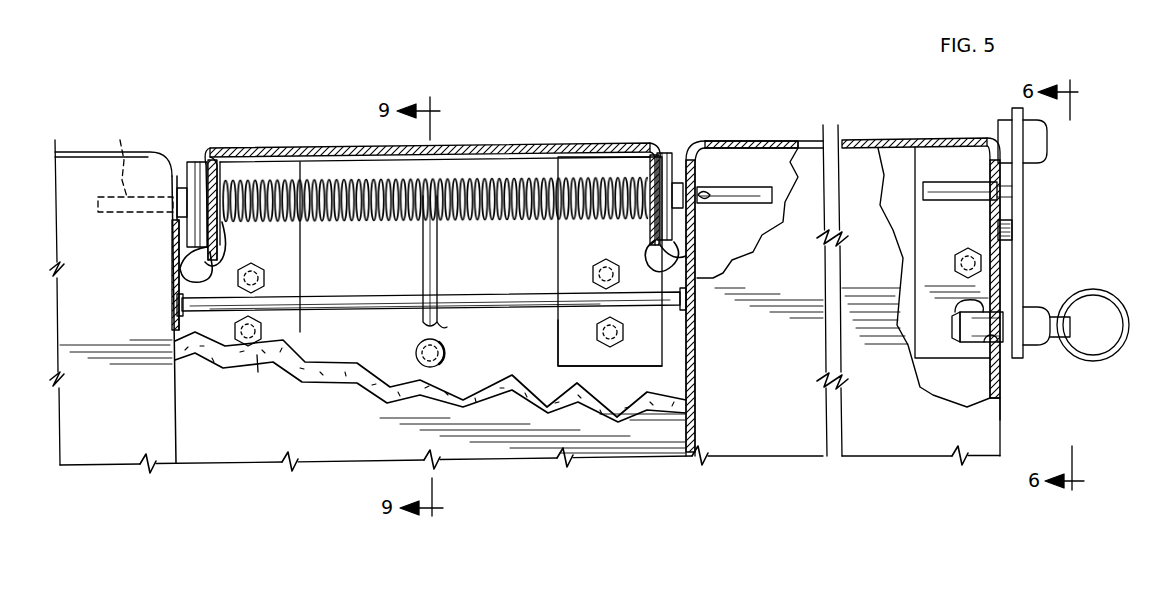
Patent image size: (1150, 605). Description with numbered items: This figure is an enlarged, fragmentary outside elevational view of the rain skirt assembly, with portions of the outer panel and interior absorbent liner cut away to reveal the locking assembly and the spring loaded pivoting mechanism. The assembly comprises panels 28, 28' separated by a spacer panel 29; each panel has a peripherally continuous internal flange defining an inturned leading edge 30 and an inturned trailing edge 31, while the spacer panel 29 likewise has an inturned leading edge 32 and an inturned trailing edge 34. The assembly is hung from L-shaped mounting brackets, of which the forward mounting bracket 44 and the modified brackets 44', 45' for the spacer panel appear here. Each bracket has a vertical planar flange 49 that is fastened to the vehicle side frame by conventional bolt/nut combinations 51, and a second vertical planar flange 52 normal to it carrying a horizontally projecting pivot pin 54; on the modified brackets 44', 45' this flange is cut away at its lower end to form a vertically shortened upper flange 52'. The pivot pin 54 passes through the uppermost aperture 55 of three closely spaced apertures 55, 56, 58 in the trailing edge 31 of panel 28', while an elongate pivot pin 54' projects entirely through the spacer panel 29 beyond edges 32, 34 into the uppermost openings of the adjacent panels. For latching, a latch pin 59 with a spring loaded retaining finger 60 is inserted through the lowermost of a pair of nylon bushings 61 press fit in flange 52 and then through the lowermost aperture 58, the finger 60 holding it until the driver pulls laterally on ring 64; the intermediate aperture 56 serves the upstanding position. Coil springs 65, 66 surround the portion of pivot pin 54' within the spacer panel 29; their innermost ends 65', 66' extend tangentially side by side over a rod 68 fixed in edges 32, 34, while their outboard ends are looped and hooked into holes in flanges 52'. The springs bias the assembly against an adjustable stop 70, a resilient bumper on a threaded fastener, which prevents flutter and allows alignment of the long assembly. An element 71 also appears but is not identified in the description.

The panel 28 is at (111, 326).
The panel 28' is at (908, 308).
The spacer panel 29 is at (495, 468).
The inturned leading edge 30 is at (705, 162).
The inturned trailing edge 31 is at (996, 292).
The inturned leading edge 32 is at (170, 279).
The inturned trailing edge 34 is at (694, 353).
The mounting bracket 44 is at (1018, 396).
The modified mounting bracket 44' is at (430, 377).
The modified mounting bracket 45' is at (588, 344).
The vertical planar flange 49 is at (302, 234).
The bolt/nut combination 51 is at (266, 283).
The second vertical planar flange 52 is at (1044, 233).
The vertically shortened upper flange 52' is at (428, 169).
The pivot pin 54 is at (956, 155).
The elongate pivot pin 54' is at (445, 161).
The aperture 55 is at (712, 197).
The intermediate aperture 56 is at (1012, 234).
The lowermost aperture 58 is at (985, 344).
The latch pin 59 is at (953, 325).
The spring loaded retaining finger 60 is at (957, 300).
The nylon bushing 61 is at (1048, 150).
The ring 64 is at (1103, 358).
The coil spring 65 is at (435, 170).
The innermost end of coil spring 65' is at (399, 266).
The coil spring 66 is at (432, 187).
The innermost end of coil spring 66' is at (469, 325).
The rod 68 is at (455, 295).
The adjustable stop 70 is at (415, 357).
The rubber strip lower layer 71 is at (258, 372).